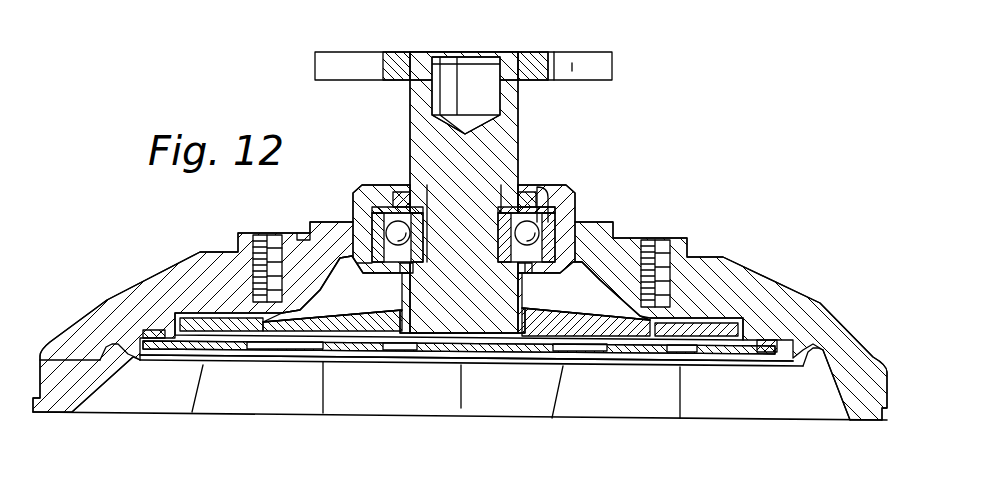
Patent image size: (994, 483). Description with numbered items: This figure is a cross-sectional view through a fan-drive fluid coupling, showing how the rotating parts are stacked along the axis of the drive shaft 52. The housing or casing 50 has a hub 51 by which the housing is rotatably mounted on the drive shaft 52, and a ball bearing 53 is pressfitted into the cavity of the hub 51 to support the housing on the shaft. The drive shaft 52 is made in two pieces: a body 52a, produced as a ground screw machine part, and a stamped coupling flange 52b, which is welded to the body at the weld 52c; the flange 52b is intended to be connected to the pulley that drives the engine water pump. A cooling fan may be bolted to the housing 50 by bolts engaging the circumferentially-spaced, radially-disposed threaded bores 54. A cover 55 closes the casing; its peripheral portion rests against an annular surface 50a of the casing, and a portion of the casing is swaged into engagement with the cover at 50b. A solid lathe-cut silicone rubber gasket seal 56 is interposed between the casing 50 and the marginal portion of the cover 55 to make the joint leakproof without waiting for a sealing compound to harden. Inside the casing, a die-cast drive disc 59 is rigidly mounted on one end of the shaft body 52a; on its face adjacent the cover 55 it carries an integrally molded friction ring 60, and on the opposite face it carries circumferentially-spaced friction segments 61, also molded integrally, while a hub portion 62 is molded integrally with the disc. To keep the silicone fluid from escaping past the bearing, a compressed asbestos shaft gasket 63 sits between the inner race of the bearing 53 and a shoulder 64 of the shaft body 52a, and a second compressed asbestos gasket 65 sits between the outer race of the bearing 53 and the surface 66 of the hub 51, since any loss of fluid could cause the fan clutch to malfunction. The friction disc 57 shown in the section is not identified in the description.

The housing 50 is at (180, 260).
The annular surface 50a is at (781, 360).
The swaged portion 50b is at (137, 358).
The hub 51 is at (353, 222).
The drive shaft 52 is at (527, 162).
The body 52a is at (418, 175).
The coupling flange 52b is at (533, 57).
The weld 52c is at (518, 85).
The bearing 53 is at (545, 218).
The threaded bores 54 is at (258, 237).
The cover 55 is at (525, 348).
The gasket seal 56 is at (150, 343).
The friction disc 57 is at (312, 365).
The drive disc 59 is at (333, 318).
The friction ring 60 is at (247, 338).
The friction segments 61 is at (220, 313).
The hub portion 62 is at (525, 305).
The shaft gasket 63 is at (540, 210).
The shoulder 64 is at (556, 218).
The second gasket 65 is at (373, 207).
The surface 66 is at (340, 235).